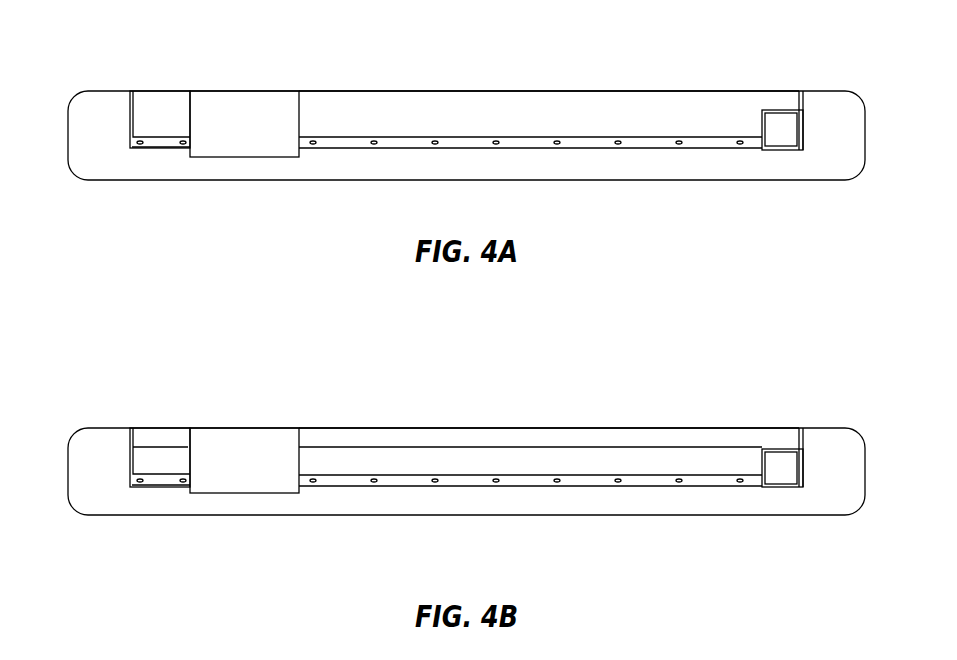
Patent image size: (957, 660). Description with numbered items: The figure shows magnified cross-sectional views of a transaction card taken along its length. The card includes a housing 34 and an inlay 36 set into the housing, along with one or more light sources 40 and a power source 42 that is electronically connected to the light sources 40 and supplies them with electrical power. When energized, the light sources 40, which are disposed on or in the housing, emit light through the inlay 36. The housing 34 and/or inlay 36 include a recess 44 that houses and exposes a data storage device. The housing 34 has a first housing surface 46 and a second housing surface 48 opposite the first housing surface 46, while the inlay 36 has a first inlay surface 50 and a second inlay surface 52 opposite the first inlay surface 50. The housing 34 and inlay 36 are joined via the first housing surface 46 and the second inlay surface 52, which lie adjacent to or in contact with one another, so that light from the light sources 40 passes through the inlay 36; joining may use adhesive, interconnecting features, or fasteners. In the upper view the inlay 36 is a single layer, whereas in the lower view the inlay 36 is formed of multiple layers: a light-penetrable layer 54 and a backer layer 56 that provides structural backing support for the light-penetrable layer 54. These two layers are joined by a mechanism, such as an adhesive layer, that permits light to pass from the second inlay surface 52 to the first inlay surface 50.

In FIG. 4A, the housing component 34 is at (466, 135).
In FIG. 4B, the housing component 34 is at (466, 471).
In FIG. 4A, the inlay component 36 is at (530, 127).
In FIG. 4B, the inlay component 36 is at (397, 358).
In FIG. 4A, the light sources 40 is at (160, 148).
In FIG. 4B, the light sources 40 is at (160, 487).
In FIG. 4A, the power source 42 is at (782, 130).
In FIG. 4B, the power source 42 is at (782, 468).
In FIG. 4A, the recess 44 is at (214, 124).
In FIG. 4B, the recess 44 is at (214, 460).
In FIG. 4A, the first housing surface 46 is at (712, 148).
In FIG. 4B, the first housing surface 46 is at (712, 487).
In FIG. 4A, the second housing surface 48 is at (715, 180).
In FIG. 4B, the second housing surface 48 is at (716, 515).
In FIG. 4A, the first inlay surface 50 is at (320, 91).
In FIG. 4B, the first inlay surface 50 is at (320, 428).
In FIG. 4A, the second inlay surface 52 is at (413, 137).
In FIG. 4B, the second inlay surface 52 is at (527, 473).
In FIG. 4B, the light-penetrable layer 54 is at (455, 440).
In FIG. 4B, the backer layer 56 is at (395, 462).